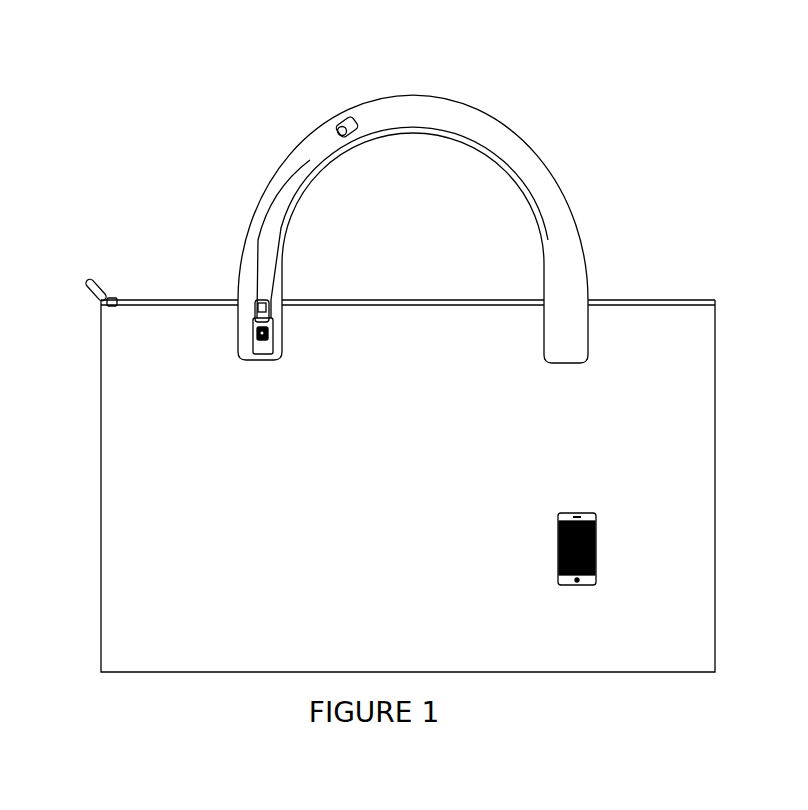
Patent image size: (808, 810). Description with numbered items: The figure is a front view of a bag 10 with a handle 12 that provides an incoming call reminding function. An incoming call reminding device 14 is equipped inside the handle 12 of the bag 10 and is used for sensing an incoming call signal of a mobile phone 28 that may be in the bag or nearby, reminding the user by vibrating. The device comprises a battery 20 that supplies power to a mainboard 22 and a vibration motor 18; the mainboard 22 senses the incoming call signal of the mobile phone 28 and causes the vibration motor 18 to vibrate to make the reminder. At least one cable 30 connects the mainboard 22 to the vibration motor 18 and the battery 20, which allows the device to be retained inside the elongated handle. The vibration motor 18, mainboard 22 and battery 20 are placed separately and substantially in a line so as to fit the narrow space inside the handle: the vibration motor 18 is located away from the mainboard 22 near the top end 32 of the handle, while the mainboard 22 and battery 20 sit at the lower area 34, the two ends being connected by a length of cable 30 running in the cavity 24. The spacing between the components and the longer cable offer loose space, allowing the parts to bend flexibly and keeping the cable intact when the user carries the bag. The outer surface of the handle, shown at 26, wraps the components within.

The bag 10 is at (652, 370).
The handle 12 is at (510, 162).
The incoming call reminding device 14 is at (278, 352).
The vibration motor 18 is at (338, 129).
The battery 20 is at (268, 310).
The mainboard 22 is at (265, 335).
The cavity 24 is at (351, 126).
The handle outer surface 26 is at (402, 103).
The mobile phone 28 is at (556, 526).
The cable 30 is at (284, 211).
The top end 32 is at (383, 101).
The lower area 34 is at (260, 360).